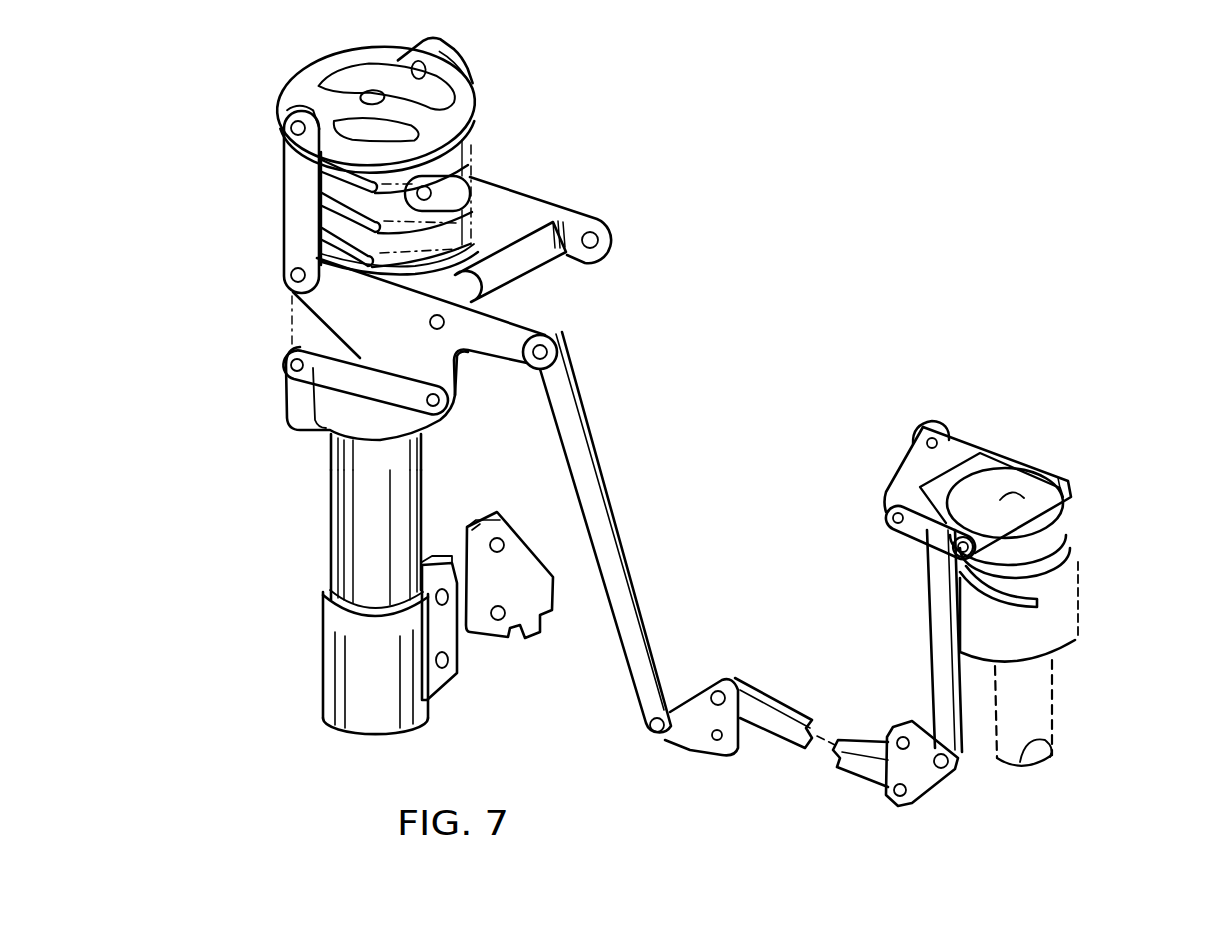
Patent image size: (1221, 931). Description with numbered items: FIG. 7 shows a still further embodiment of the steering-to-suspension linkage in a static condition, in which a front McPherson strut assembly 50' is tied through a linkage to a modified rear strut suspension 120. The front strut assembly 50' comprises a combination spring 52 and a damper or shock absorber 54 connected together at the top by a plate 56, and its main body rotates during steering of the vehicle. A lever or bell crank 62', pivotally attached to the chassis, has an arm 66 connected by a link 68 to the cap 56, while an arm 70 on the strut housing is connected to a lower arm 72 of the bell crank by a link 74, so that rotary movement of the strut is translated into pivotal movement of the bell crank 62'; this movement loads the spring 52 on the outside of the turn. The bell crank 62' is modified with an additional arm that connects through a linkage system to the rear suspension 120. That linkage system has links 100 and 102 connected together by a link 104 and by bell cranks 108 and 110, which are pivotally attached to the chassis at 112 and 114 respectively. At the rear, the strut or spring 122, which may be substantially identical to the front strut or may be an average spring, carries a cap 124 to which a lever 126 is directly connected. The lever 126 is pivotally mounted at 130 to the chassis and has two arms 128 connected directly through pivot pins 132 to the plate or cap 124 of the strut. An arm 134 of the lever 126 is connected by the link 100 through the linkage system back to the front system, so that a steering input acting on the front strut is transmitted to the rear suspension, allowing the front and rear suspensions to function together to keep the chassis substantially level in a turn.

The McPherson strut assembly 50' is at (528, 180).
The spring 52 is at (343, 212).
The damper or shock absorber 54 is at (402, 491).
The plate 56 is at (458, 84).
The bell crank 62' is at (533, 243).
The arm 66 is at (338, 300).
The link 68 is at (292, 216).
The arm 70 is at (290, 398).
The lower arm 72 is at (438, 366).
The link 74 is at (373, 387).
The link 100 is at (936, 630).
The link 102 is at (592, 487).
The link 104 is at (786, 722).
The bell crank 108 is at (923, 770).
The bell crank 110 is at (698, 707).
The pivot 112 is at (890, 738).
The pivot 114 is at (717, 740).
The rear strut suspension 120 is at (1118, 531).
The strut or spring 122 is at (1050, 583).
The cap 124 is at (1033, 503).
The lever 126 is at (918, 483).
The arms 128 is at (1001, 443).
The pivot mount 130 is at (896, 518).
The pivot pins 132 is at (952, 568).
The arm 134 is at (943, 424).